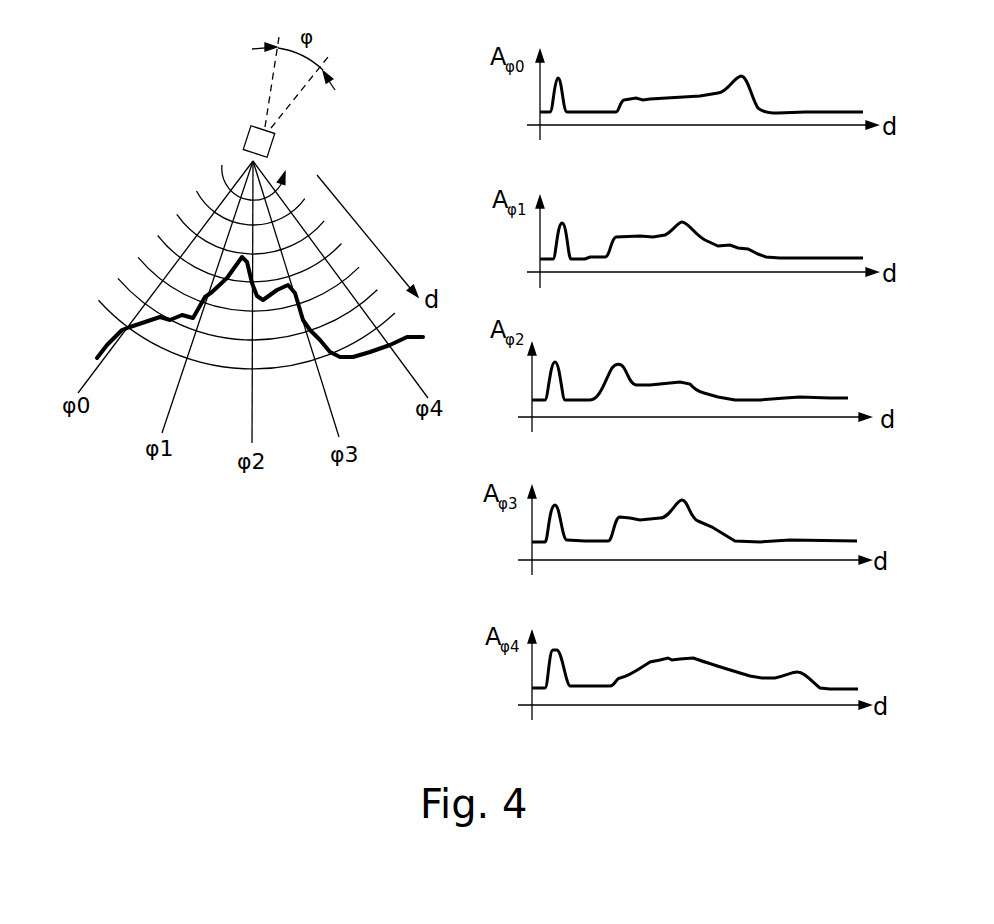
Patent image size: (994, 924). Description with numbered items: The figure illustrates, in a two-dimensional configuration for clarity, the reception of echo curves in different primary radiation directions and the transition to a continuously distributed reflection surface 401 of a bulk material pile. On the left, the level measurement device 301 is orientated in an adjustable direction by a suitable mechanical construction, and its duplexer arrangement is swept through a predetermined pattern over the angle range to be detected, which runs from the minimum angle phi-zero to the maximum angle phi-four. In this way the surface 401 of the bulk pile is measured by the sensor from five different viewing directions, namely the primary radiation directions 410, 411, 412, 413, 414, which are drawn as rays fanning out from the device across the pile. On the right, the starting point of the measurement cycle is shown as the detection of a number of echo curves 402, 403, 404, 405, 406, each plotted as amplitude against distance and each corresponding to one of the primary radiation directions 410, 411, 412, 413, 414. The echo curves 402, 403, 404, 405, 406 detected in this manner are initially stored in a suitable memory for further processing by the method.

The level measurement device 301 is at (246, 135).
The reflection surface of bulk material pile 401 is at (98, 358).
The echo curve 402 is at (803, 112).
The echo curve 403 is at (790, 256).
The echo curve 404 is at (784, 398).
The echo curve 405 is at (790, 541).
The echo curve 406 is at (770, 681).
The primary radiation direction 410 is at (85, 377).
The primary radiation direction 411 is at (165, 420).
The primary radiation direction 412 is at (252, 415).
The primary radiation direction 413 is at (335, 412).
The primary radiation direction 414 is at (403, 362).